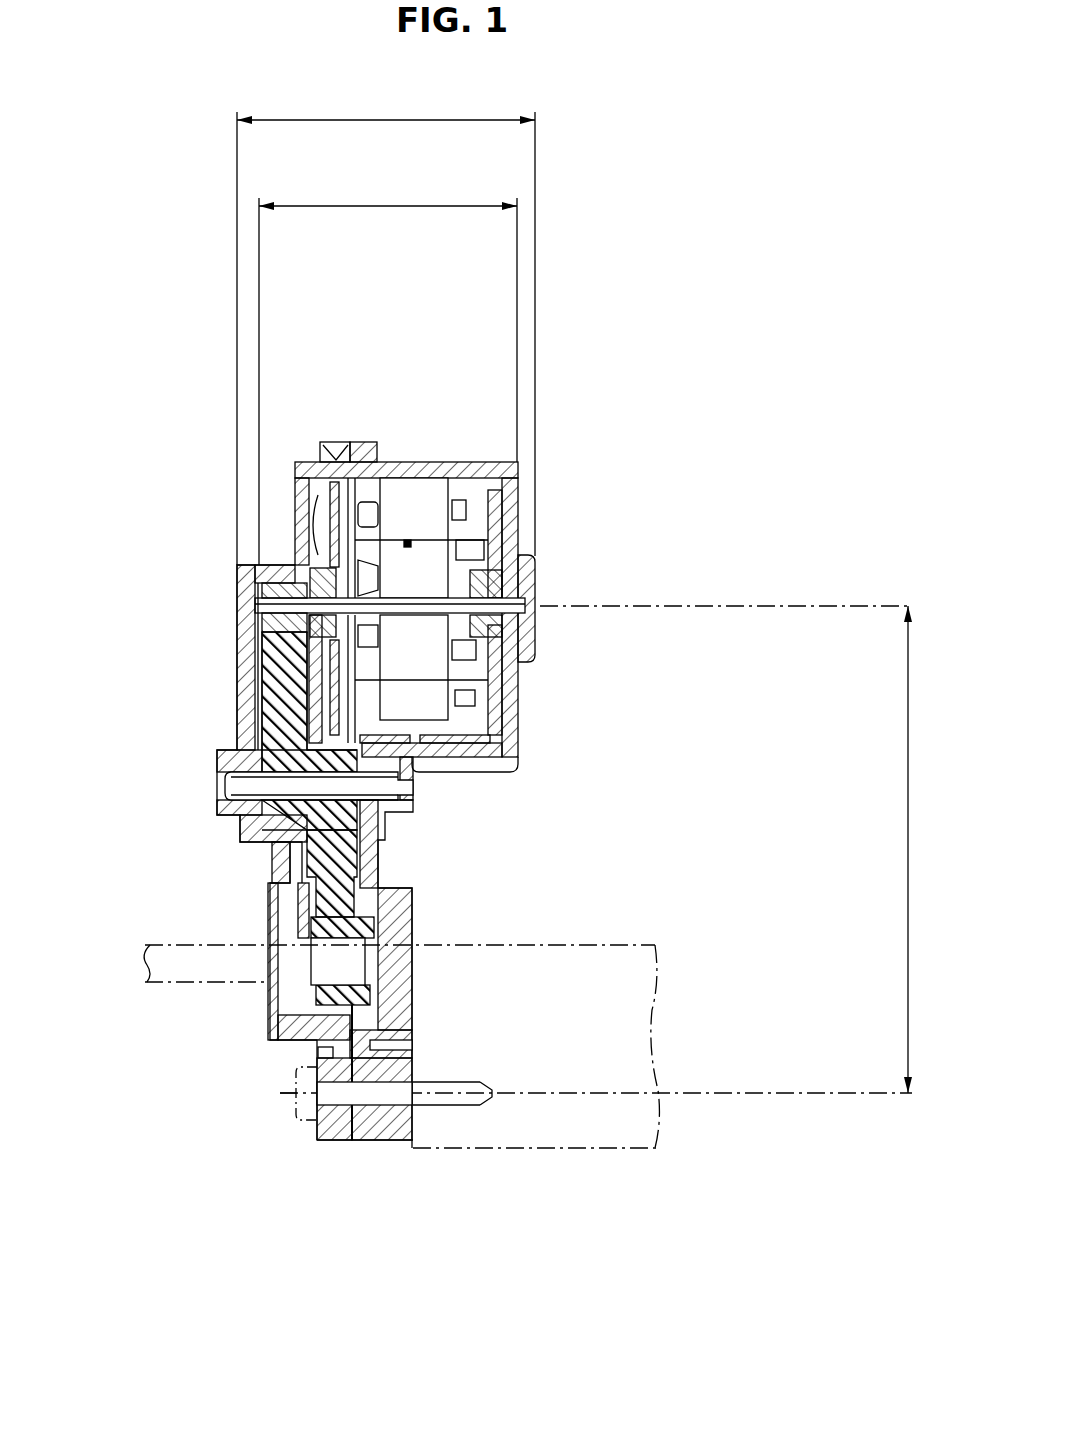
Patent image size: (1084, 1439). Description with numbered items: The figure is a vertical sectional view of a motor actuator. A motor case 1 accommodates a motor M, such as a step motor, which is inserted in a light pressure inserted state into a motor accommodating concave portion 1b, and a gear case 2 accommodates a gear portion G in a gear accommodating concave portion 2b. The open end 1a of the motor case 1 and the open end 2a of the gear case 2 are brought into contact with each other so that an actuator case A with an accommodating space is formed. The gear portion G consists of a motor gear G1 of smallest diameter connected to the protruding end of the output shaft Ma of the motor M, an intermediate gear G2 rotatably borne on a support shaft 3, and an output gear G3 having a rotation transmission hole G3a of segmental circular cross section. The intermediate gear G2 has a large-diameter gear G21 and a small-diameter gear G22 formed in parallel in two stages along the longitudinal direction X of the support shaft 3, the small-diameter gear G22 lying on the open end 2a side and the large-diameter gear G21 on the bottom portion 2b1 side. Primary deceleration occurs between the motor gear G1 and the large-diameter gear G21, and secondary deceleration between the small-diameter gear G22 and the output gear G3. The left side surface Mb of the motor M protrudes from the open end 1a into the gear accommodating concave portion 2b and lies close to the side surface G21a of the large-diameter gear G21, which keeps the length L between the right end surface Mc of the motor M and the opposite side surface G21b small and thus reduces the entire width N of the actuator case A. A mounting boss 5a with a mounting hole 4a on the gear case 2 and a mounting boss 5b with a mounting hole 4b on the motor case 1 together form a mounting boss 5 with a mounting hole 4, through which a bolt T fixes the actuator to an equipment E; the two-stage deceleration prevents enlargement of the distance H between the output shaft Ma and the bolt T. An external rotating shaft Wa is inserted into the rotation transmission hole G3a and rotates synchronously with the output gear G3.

The motor case 1 is at (516, 487).
The open end of the motor case 1a is at (372, 462).
The motor accommodating concave portion 1b is at (435, 478).
The gear case 2 is at (235, 614).
The open end of the gear case 2a is at (325, 462).
The gear accommodating concave portion 2b is at (258, 700).
The bottom portion of the gear accommodating concave portion 2b1 is at (258, 642).
The support shaft 3 is at (382, 808).
The mounting hole 4 is at (430, 1308).
The mounting hole of the gear case boss 4a is at (316, 1143).
The mounting hole of the motor case boss 4b is at (402, 1143).
The mounting boss 5 is at (391, 1228).
The mounting boss of the gear case 5a is at (323, 1143).
The mounting boss of the motor case 5b is at (375, 1143).
The actuator case A is at (391, 558).
The equipment E is at (602, 1155).
The gear portion G is at (399, 846).
The motor gear G1 is at (258, 590).
The intermediate gear G2 is at (380, 850).
The large-diameter gear G21 is at (255, 672).
The side surface of the large-diameter gear on the open end side G21a is at (191, 691).
The side surface of the large-diameter gear on the bottom portion side G21b is at (245, 735).
The small-diameter gear G22 is at (441, 877).
The output gear G3 is at (378, 1003).
The rotation transmission hole G3a is at (312, 965).
The distance between the output shaft and the bolt H is at (596, 849).
The length between the motor right end surface and the large-diameter gear left side L is at (388, 381).
The motor M is at (503, 695).
The output shaft Ma is at (528, 617).
The left side surface of the motor Mb is at (298, 547).
The right end surface of the motor Mc is at (520, 545).
The entire width of the actuator case N is at (386, 338).
The bolt T is at (300, 1100).
The rotating shaft Wa is at (148, 988).
The longitudinal direction of the support shaft X is at (232, 787).